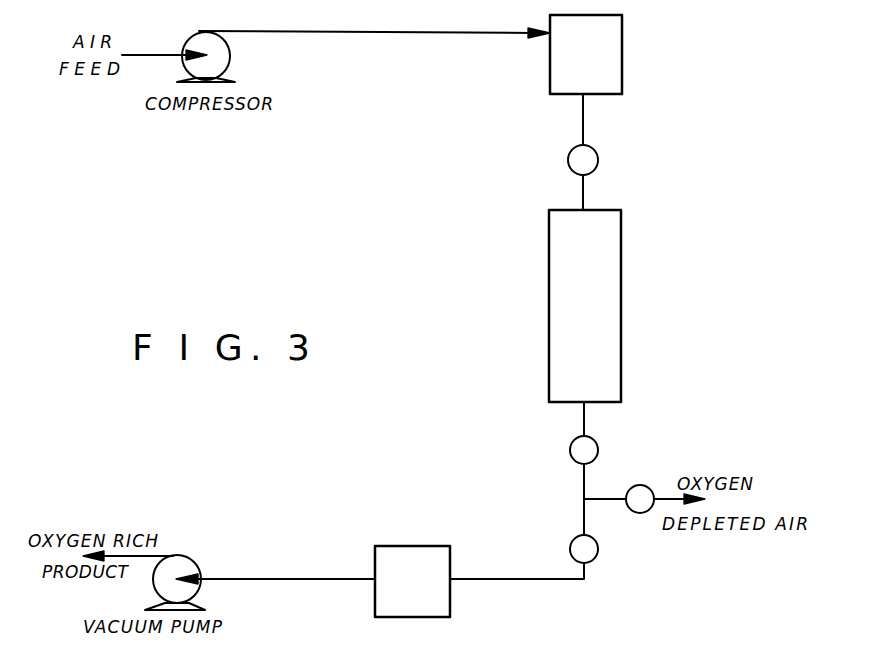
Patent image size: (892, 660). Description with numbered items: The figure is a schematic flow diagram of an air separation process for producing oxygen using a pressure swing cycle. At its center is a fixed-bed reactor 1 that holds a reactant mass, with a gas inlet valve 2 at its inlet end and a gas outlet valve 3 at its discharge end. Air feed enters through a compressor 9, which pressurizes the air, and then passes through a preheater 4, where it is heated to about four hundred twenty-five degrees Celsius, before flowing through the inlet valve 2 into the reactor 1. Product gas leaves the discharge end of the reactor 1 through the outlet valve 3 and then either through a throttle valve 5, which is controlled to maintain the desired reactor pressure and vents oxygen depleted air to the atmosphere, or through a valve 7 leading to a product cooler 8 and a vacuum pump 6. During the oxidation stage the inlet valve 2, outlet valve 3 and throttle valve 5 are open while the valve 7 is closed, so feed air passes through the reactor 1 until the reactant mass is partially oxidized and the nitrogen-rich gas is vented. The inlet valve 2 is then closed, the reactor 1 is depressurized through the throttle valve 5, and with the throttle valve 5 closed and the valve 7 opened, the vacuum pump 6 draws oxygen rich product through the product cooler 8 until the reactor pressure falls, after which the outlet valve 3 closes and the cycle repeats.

The fixed-bed reactor 1 is at (608, 284).
The inlet valve 2 is at (598, 158).
The outlet valve 3 is at (598, 443).
The preheater 4 is at (612, 52).
The throttle valve 5 is at (647, 488).
The vacuum pump 6 is at (183, 555).
The valve 7 is at (598, 543).
The product cooler 8 is at (450, 555).
The compressor 9 is at (231, 53).